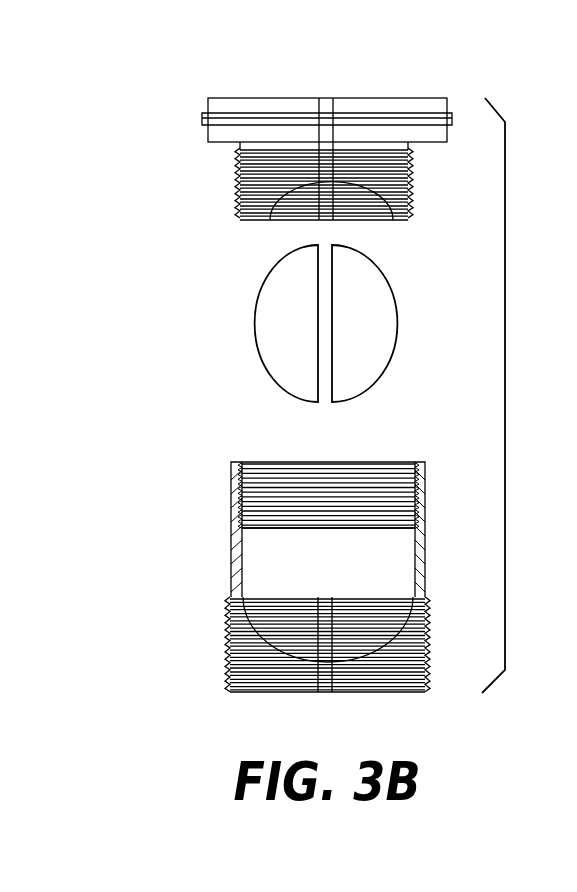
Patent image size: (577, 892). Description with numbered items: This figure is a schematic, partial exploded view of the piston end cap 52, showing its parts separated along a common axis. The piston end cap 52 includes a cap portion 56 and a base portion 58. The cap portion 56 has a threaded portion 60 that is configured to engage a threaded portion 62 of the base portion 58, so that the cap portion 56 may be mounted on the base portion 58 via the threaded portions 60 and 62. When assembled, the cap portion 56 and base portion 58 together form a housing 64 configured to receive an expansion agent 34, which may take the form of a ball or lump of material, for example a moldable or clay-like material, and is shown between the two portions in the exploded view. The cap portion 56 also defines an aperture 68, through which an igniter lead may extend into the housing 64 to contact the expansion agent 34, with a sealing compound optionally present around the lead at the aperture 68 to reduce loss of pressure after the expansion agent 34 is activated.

The piston end cap 52 is at (505, 343).
The cap portion 56 is at (325, 129).
The aperture 68 is at (328, 105).
The threaded portion 60 is at (238, 183).
The expansion agent 34 is at (267, 320).
The base portion 58 is at (325, 553).
The threaded portion 62 is at (247, 482).
The housing 64 is at (385, 540).